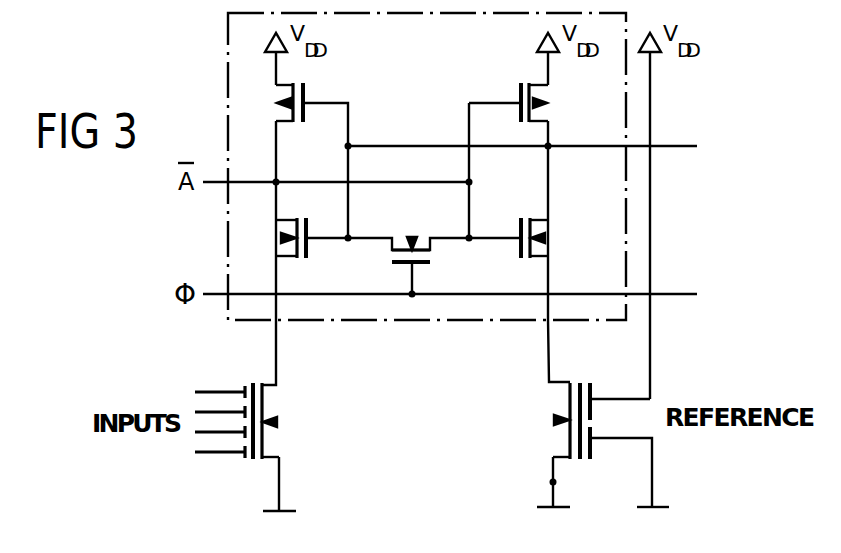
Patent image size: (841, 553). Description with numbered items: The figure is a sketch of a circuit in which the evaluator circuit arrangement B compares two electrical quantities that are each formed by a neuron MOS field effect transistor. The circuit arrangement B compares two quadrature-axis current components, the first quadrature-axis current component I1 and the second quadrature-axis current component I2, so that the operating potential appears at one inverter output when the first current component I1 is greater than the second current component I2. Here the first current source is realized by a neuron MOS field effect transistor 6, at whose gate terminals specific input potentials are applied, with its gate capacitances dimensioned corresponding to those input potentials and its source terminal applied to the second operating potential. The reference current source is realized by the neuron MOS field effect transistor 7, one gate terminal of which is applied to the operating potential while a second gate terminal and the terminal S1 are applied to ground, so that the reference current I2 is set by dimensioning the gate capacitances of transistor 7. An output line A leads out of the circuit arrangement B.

The neuron MOS field effect transistor 6 is at (270, 445).
The neuron MOS field effect transistor 7 is at (560, 441).
The circuit arrangement B is at (236, 84).
The output line A is at (531, 143).
The first quadrature-axis current component I1 is at (263, 352).
The second quadrature-axis current component I2 is at (541, 351).
The terminal S1 is at (553, 482).